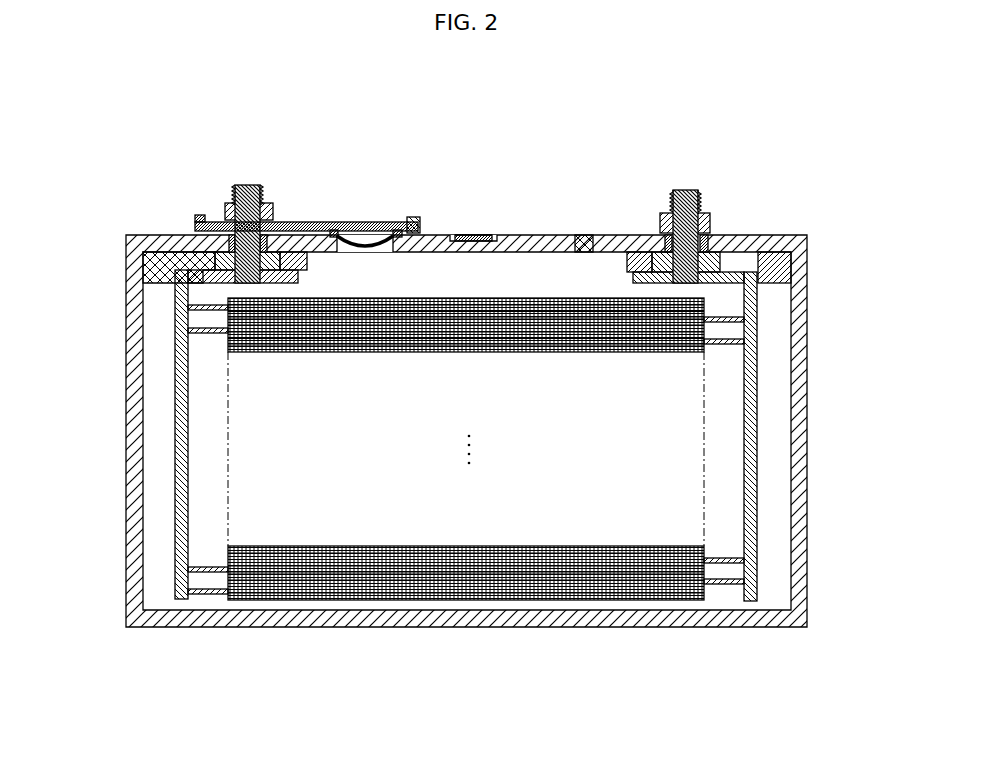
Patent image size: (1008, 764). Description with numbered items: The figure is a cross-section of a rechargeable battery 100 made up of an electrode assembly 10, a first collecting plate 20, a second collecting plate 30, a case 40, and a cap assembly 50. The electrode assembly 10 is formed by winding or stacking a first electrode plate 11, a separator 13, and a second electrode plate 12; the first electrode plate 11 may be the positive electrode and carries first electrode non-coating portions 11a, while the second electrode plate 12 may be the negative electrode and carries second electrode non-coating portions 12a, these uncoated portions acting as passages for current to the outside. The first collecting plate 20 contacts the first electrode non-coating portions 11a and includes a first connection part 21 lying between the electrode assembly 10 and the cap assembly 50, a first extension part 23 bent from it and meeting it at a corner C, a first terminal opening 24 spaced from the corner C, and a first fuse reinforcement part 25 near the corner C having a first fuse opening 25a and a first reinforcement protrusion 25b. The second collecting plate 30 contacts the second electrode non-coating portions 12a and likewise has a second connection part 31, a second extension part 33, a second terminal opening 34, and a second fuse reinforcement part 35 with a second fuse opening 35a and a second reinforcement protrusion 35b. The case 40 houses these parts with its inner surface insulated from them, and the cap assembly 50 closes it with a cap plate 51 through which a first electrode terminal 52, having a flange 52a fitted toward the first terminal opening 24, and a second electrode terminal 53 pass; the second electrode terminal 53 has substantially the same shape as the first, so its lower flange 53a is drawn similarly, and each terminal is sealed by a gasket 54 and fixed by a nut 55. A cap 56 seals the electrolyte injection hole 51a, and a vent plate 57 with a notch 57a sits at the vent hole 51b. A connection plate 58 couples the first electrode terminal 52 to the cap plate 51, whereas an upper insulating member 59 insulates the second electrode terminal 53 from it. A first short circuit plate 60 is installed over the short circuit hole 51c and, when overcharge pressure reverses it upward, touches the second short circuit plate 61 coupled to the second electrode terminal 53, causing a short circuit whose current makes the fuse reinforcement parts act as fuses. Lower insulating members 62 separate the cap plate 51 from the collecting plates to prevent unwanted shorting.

The rechargeable battery 100 is at (467, 366).
The electrode assembly 10 is at (466, 491).
The first electrode plate 11 is at (678, 500).
The first electrode non-coating portions 11a is at (724, 592).
The second electrode plate 12 is at (267, 494).
The second electrode non-coating portions 12a is at (208, 592).
The separator 13 is at (485, 598).
The first collecting plate 20 is at (729, 363).
The first connection part 21 is at (722, 248).
The first extension part 23 is at (752, 457).
The first terminal opening 24 is at (690, 284).
The first fuse reinforcement part 25 is at (733, 214).
The first fuse opening 25a is at (775, 268).
The first reinforcement protrusion 25b is at (742, 262).
The second collecting plate 30 is at (387, 362).
The second connection part 31 is at (207, 233).
The second extension part 33 is at (180, 471).
The second terminal opening 34 is at (245, 284).
The second fuse reinforcement part 35 is at (201, 215).
The second fuse opening 35a is at (150, 262).
The second reinforcement protrusion 35b is at (172, 275).
The case 40 is at (797, 345).
The cap assembly 50 is at (394, 192).
The cap plate 51 is at (458, 236).
The electrolyte injection hole 51a is at (580, 252).
The vent hole 51b is at (471, 251).
The short circuit hole 51c is at (388, 251).
The first electrode terminal 52 is at (645, 207).
The flange 52a is at (650, 262).
The second electrode terminal 53 is at (293, 205).
The negative terminal flange 53a is at (303, 262).
The gasket 54 is at (232, 238).
The nut 55 is at (264, 204).
The cap 56 is at (579, 236).
The vent plate 57 is at (475, 209).
The notch 57a is at (470, 235).
The connection plate 58 is at (712, 250).
The upper insulating member 59 is at (412, 218).
The first short circuit plate 60 is at (364, 243).
The second short circuit plate 61 is at (307, 198).
The lower insulating member 62 is at (152, 262).
The corner C is at (135, 251).